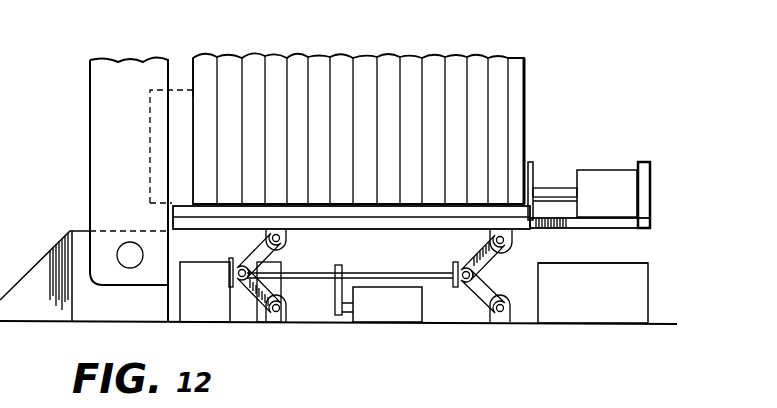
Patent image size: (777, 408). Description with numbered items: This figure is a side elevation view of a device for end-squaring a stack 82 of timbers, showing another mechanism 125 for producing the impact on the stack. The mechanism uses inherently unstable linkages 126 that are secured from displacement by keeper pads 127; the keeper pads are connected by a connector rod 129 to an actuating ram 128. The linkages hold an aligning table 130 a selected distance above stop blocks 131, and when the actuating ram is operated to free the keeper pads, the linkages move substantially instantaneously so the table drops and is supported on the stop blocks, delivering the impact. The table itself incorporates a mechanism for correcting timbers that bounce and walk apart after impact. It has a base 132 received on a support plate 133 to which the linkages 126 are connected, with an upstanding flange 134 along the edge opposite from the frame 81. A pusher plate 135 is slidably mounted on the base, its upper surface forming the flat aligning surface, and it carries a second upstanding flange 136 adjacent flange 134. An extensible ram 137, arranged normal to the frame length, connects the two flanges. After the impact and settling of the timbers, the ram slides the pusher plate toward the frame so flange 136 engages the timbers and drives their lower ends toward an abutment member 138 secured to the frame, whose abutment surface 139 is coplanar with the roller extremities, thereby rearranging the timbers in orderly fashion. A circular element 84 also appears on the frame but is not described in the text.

The frame 81 is at (103, 113).
The stack 82 is at (396, 60).
The guide roller 84 is at (117, 249).
The mechanism 125 is at (650, 259).
The linkages 126 is at (262, 238).
The keeper pads 127 is at (240, 285).
The actuating ram 128 is at (393, 272).
The connector rod 129 is at (385, 307).
The aligning table 130 is at (651, 181).
The stop blocks 131 is at (197, 288).
The base 132 is at (568, 226).
The support plate 133 is at (296, 235).
The upstanding flange 134 is at (650, 205).
The pusher plate 135 is at (494, 207).
The upstanding flange 136 is at (534, 164).
The extensible ram 137 is at (615, 178).
The abutment member 138 is at (178, 165).
The abutment surface 139 is at (196, 97).